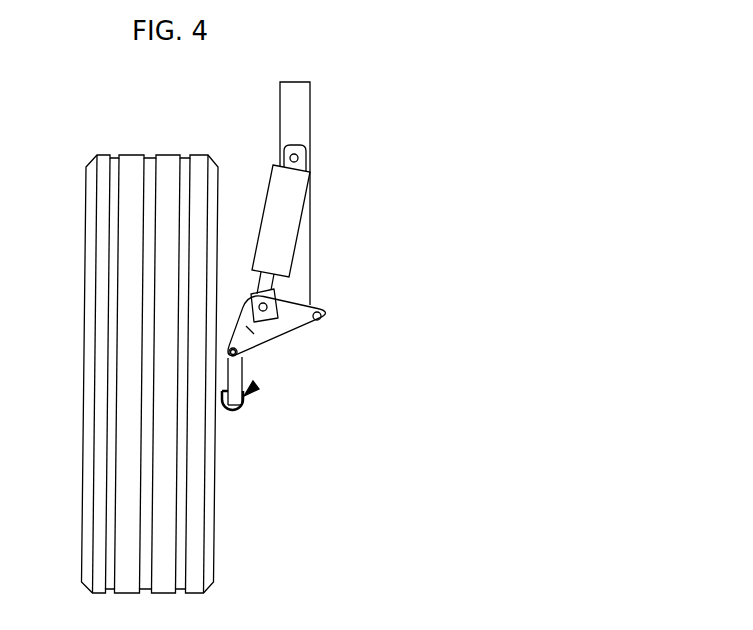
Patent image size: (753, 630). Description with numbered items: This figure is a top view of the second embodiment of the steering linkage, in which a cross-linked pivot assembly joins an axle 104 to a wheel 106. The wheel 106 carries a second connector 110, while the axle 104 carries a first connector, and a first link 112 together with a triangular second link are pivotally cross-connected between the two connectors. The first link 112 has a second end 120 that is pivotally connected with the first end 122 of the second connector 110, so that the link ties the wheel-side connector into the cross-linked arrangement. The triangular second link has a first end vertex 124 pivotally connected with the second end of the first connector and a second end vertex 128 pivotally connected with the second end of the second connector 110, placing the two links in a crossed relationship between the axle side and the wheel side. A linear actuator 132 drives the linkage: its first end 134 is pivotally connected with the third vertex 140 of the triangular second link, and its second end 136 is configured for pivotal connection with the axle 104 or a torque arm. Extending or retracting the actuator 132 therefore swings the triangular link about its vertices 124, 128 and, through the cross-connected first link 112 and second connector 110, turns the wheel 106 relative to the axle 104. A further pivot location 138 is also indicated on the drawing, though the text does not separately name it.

The axle 104 is at (300, 102).
The wheel 106 is at (120, 225).
The second connector 110 is at (252, 392).
The first link 112 is at (255, 368).
The second end of the first link 120 is at (238, 410).
The first end of the second connector 122 is at (245, 397).
The first end vertex of the second link 124 is at (332, 330).
The second end vertex of the second link 128 is at (231, 348).
The linear actuator 132 is at (287, 218).
The first end of the linear actuator 134 is at (287, 293).
The second end of the linear actuator 136 is at (306, 152).
The pivot pin 138 is at (234, 345).
The third vertex of the second link 140 is at (250, 330).